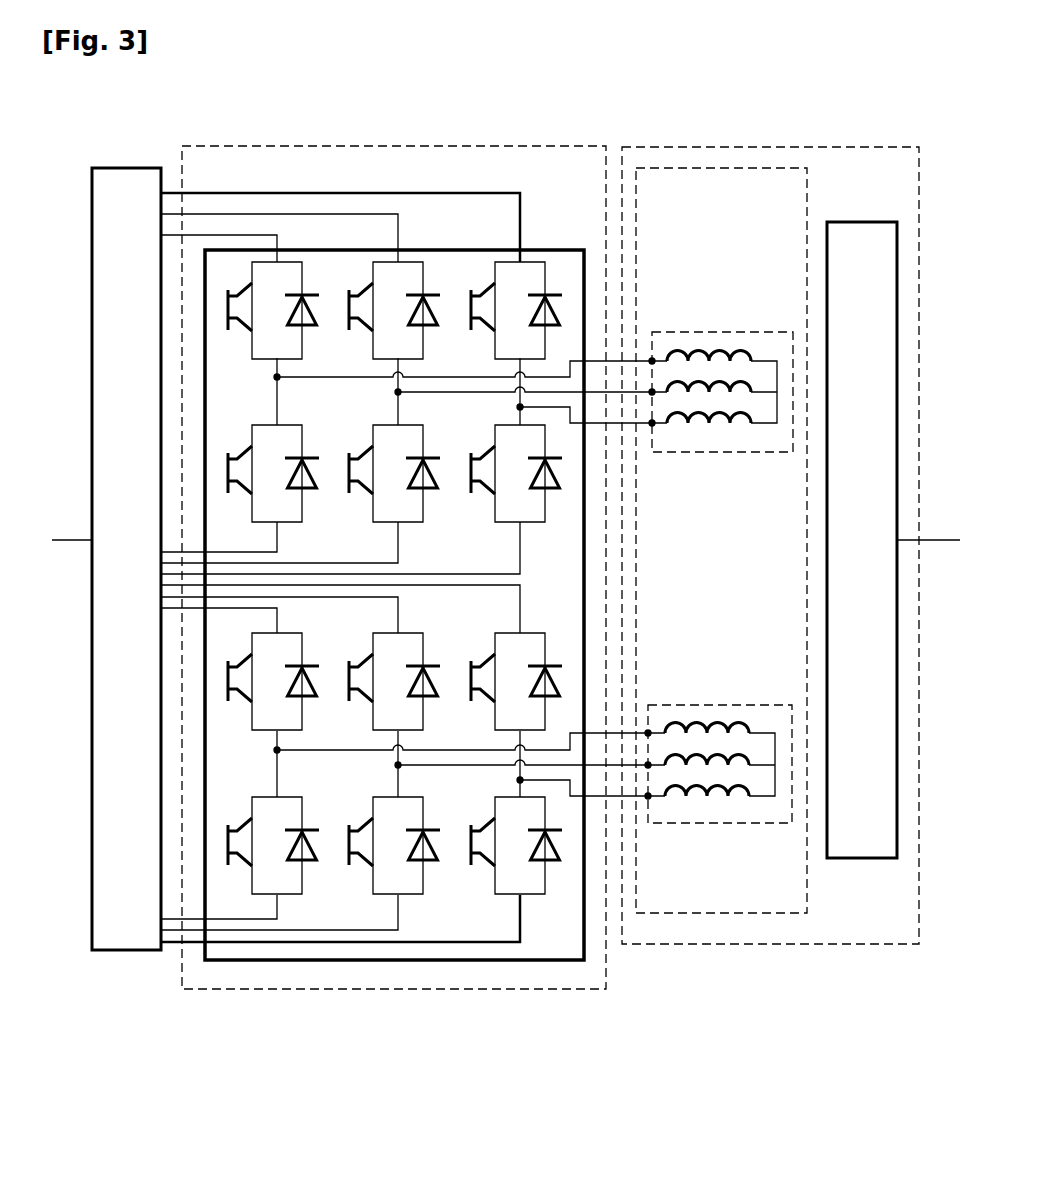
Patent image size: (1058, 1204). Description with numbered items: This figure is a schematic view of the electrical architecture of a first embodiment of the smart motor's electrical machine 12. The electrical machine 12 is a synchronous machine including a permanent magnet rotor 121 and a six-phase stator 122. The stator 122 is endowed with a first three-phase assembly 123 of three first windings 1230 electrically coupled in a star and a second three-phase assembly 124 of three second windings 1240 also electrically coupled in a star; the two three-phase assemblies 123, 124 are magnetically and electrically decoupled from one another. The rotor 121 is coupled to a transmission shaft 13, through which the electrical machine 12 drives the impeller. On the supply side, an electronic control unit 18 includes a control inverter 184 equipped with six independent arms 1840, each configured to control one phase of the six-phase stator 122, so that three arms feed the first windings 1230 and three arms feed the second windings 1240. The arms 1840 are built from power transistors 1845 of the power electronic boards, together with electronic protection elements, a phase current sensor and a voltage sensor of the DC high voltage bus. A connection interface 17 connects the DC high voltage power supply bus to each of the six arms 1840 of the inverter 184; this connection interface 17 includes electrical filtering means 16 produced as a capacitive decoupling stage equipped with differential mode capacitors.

The electrical machine 12 is at (779, 147).
The transmission shaft 13 is at (943, 540).
The electrical filtering means 16 is at (123, 950).
The connection interface 17 is at (138, 554).
The electronic control unit 18 is at (388, 990).
The permanent magnet rotor 121 is at (880, 554).
The six-phase stator 122 is at (807, 913).
The first three-phase assembly 123 is at (718, 332).
The second three-phase assembly 124 is at (718, 705).
The control inverter 184 is at (310, 961).
The first windings 1230 is at (747, 361).
The second windings 1240 is at (745, 733).
The independent arms 1840 is at (492, 262).
The power transistors 1845 is at (484, 496).